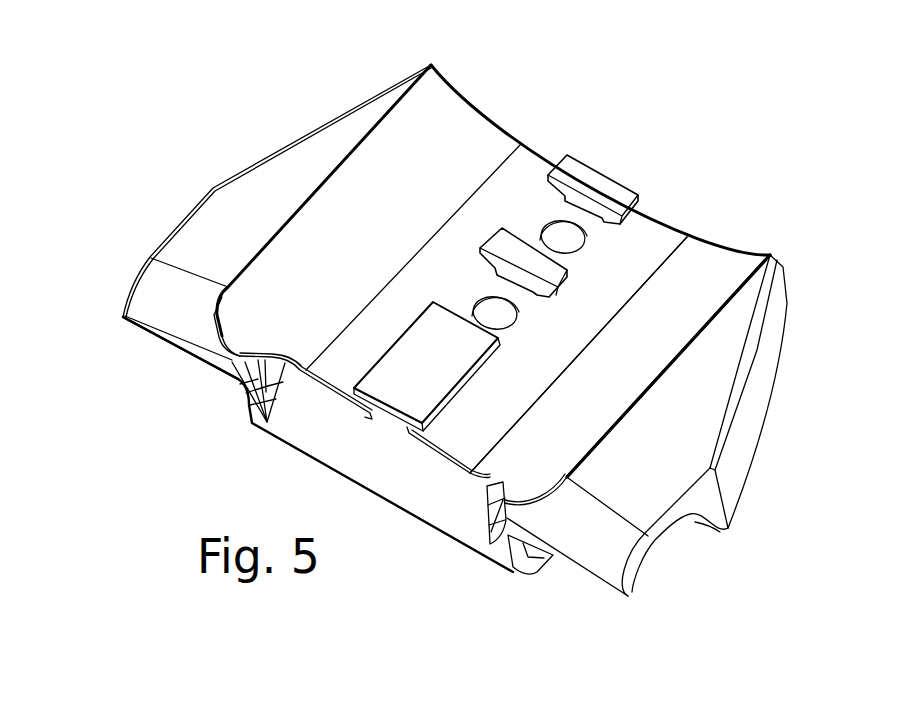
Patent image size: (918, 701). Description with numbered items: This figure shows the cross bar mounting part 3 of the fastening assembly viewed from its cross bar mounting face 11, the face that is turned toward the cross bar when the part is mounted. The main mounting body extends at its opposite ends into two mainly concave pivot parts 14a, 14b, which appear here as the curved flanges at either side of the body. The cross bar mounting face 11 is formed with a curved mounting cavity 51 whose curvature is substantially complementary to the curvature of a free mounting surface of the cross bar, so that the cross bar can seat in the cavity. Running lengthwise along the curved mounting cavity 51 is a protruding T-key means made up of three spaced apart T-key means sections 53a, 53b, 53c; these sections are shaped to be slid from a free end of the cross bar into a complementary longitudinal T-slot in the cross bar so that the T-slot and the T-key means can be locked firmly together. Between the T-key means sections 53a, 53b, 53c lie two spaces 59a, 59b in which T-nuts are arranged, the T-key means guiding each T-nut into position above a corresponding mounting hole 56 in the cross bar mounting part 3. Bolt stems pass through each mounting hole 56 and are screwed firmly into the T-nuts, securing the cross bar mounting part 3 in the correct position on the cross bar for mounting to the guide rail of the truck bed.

The cross bar mounting part 3 is at (207, 100).
The cross bar mounting face 11 is at (442, 92).
The pivot part 14a is at (667, 542).
The pivot part 14b is at (124, 298).
The curved mounting cavity 51 is at (710, 270).
The T-key means section 53a is at (457, 373).
The T-key means section 53b is at (550, 268).
The T-key means section 53c is at (617, 188).
The mounting hole 56 is at (580, 245).
The space 59a is at (442, 278).
The space 59b is at (527, 195).